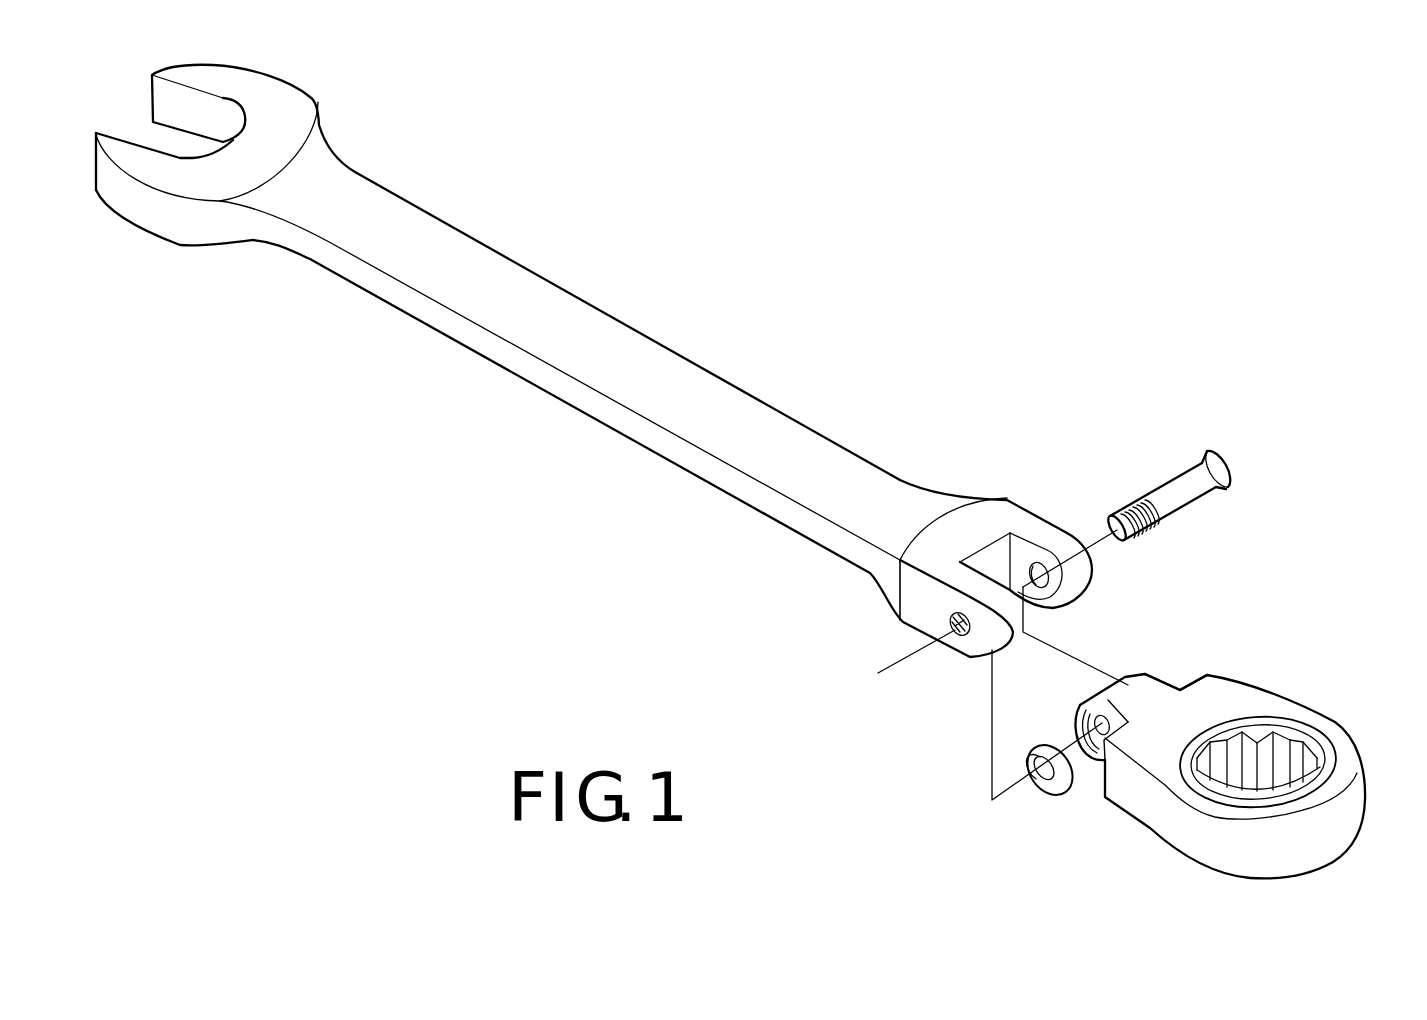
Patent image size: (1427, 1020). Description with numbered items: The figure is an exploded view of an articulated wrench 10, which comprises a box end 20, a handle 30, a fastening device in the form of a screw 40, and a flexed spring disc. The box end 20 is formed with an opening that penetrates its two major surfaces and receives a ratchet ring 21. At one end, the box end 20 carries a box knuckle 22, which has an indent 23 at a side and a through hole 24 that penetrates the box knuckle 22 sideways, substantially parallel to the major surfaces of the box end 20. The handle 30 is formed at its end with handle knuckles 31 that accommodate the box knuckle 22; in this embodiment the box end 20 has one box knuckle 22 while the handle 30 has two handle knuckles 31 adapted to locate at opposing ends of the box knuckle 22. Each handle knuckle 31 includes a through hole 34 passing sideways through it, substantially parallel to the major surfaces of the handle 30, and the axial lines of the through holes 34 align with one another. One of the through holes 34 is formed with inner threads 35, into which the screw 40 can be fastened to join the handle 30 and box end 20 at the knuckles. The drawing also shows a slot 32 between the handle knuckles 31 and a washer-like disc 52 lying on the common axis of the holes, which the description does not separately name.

The articulated wrench 10 is at (1058, 405).
The box end 20 is at (1210, 740).
The ratchet ring 21 is at (1290, 740).
The box knuckle 22 is at (1128, 688).
The indent 23 is at (1095, 722).
The through hole 24 is at (1061, 702).
The handle 30 is at (996, 600).
The handle knuckle 31 is at (1073, 553).
The slot 32 is at (993, 553).
The through hole 34 is at (1030, 567).
The inner threads 35 is at (957, 640).
The screw 40 is at (1175, 487).
The washer 52 is at (1027, 790).